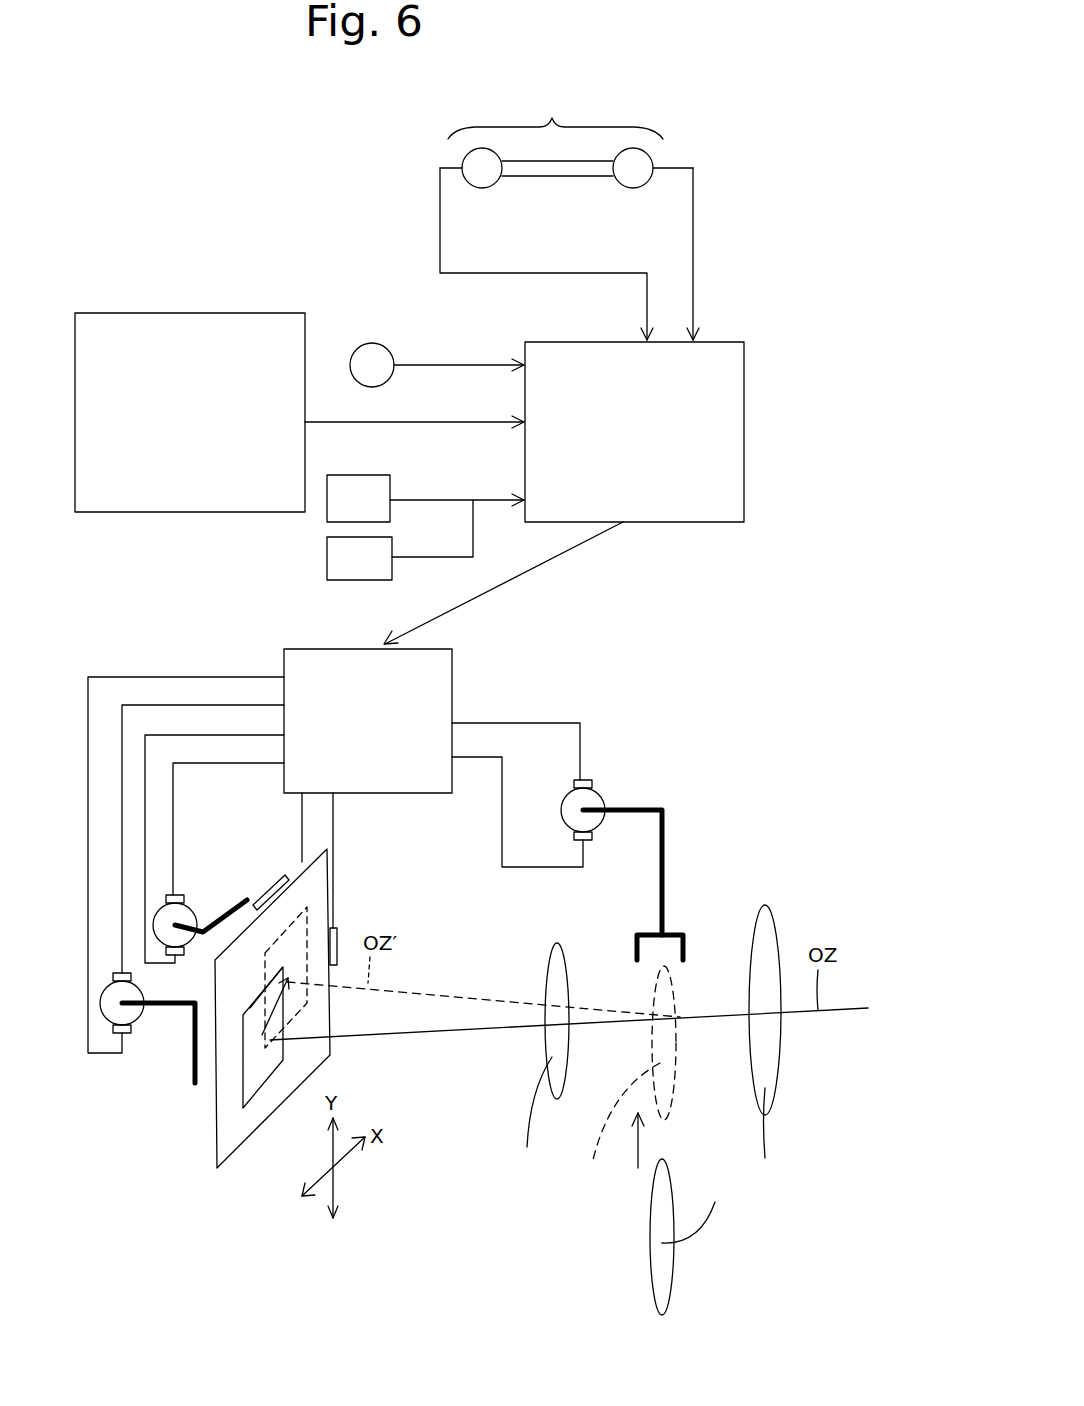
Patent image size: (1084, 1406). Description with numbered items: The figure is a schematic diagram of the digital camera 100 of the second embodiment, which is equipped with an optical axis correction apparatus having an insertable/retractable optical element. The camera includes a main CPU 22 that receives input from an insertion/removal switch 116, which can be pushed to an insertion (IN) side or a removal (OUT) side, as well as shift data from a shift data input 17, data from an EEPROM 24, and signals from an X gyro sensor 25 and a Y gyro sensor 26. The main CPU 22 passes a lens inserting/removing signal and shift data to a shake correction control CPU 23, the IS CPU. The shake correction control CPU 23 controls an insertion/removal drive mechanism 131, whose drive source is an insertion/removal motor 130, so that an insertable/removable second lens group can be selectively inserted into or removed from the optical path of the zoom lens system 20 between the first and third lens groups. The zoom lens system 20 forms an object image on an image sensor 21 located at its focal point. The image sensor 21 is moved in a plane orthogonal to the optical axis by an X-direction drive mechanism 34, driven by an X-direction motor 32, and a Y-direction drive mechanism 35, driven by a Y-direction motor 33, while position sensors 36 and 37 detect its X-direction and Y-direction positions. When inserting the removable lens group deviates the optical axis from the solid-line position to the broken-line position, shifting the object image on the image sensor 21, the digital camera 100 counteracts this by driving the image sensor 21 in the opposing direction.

The digital camera 100 is at (193, 157).
The insertion/removal switch 116 is at (569, 215).
The EEPROM 24 is at (282, 312).
The shift data input 17 is at (380, 352).
The main CPU 22 is at (708, 341).
The X gyro sensor 25 is at (375, 474).
The Y gyro sensor 26 is at (370, 580).
The shake correction control CPU 23 is at (343, 648).
The insertion/removal motor 130 is at (585, 800).
The insertion/removal drive mechanism 131 is at (665, 835).
The X-direction motor 32 is at (180, 912).
The X-direction drive mechanism 34 is at (238, 897).
The position sensor 36 is at (280, 882).
The position sensor 37 is at (338, 947).
The Y-direction motor 33 is at (133, 1013).
The Y-direction drive mechanism 35 is at (193, 1047).
The image sensor 21 is at (252, 1128).
The zoom lens system 20 is at (587, 1233).